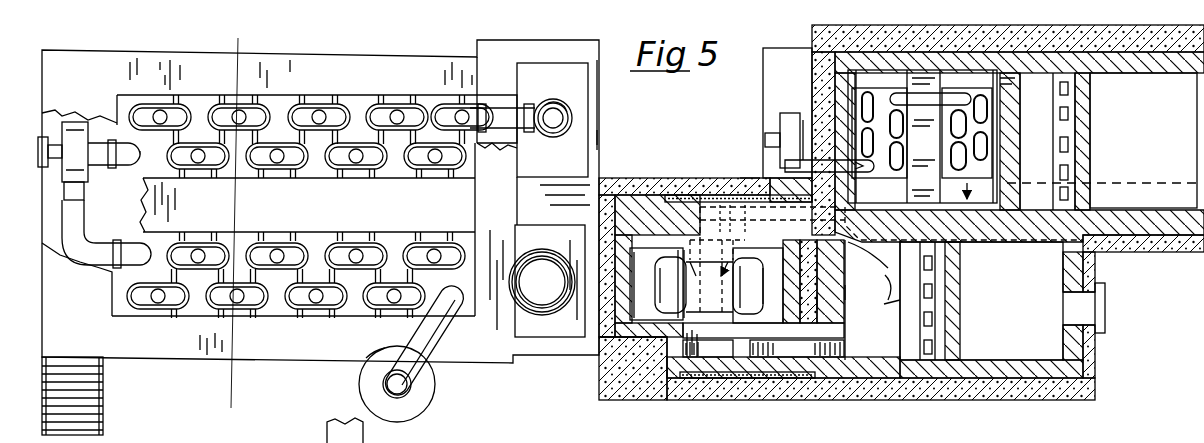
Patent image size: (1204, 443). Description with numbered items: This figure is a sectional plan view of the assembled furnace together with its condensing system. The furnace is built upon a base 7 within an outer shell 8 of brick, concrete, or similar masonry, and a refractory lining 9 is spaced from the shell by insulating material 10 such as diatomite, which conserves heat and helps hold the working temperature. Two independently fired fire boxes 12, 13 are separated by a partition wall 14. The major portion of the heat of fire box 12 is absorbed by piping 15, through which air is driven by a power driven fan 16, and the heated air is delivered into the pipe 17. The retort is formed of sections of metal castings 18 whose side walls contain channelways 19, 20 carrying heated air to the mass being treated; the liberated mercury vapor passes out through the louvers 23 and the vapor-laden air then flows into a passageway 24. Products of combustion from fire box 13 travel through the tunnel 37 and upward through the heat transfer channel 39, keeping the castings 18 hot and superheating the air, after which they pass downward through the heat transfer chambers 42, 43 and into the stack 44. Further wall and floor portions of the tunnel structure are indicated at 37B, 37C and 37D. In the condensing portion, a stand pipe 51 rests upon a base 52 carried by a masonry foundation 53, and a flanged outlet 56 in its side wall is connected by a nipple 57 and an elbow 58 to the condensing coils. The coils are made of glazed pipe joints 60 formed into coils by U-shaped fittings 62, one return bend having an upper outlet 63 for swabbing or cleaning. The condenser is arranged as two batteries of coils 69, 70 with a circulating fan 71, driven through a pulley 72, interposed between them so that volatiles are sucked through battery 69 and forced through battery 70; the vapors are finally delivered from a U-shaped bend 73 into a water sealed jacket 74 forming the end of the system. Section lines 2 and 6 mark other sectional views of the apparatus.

The section line 2- 2 is at (251, 38).
The section line 6- 6 is at (482, 152).
The base 7 is at (748, 164).
The outer shell 8 is at (1062, 47).
The refractory lining 9 is at (695, 215).
The insulating material 10 is at (667, 198).
The fire box 12 is at (775, 160).
The fire box 13 is at (1087, 279).
The partition wall 14 is at (1090, 270).
The piping 15 is at (877, 100).
The power driven fan 16 is at (789, 113).
The pipe 17 is at (975, 246).
The metal castings 18 is at (659, 297).
The channelway 19 is at (663, 275).
The channelway 20 is at (700, 293).
The louvers 23 is at (695, 277).
The passageway 24 is at (845, 288).
The tunnel 37 is at (833, 265).
The floor corner 37B is at (623, 399).
The grating 37C is at (718, 335).
The floor section 37D is at (898, 299).
The heat transfer channel 39 is at (860, 350).
The heat transfer chamber 42 is at (845, 303).
The heat transfer chamber 43 is at (600, 343).
The stack 44 is at (543, 298).
The stand pipe 51 is at (601, 120).
The base 52 is at (601, 100).
The masonry foundation 53 is at (601, 137).
The flanged outlet 56 is at (562, 120).
The nipple 57 is at (525, 115).
The elbow 58 is at (464, 118).
The glazed pipe joint 60 is at (348, 130).
The U-shaped fitting 62 is at (292, 106).
The outlet 63 is at (322, 120).
The battery of coils 69 is at (392, 105).
The battery of coils 70 is at (353, 300).
The circulating fan 71 is at (84, 182).
The pulley 72 is at (64, 182).
The U-shaped bend 73 is at (438, 341).
The water sealed jacket 74 is at (425, 396).